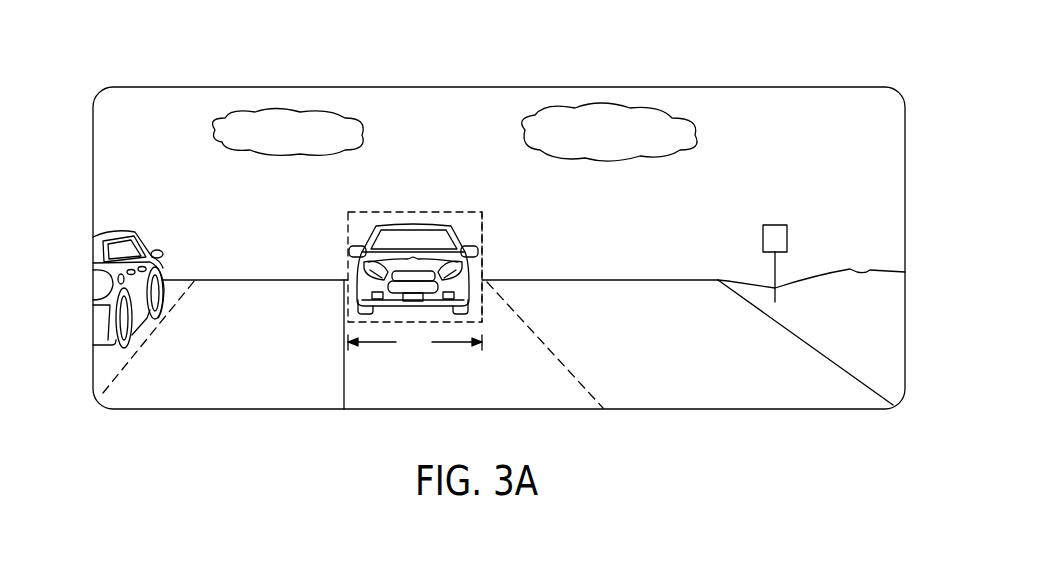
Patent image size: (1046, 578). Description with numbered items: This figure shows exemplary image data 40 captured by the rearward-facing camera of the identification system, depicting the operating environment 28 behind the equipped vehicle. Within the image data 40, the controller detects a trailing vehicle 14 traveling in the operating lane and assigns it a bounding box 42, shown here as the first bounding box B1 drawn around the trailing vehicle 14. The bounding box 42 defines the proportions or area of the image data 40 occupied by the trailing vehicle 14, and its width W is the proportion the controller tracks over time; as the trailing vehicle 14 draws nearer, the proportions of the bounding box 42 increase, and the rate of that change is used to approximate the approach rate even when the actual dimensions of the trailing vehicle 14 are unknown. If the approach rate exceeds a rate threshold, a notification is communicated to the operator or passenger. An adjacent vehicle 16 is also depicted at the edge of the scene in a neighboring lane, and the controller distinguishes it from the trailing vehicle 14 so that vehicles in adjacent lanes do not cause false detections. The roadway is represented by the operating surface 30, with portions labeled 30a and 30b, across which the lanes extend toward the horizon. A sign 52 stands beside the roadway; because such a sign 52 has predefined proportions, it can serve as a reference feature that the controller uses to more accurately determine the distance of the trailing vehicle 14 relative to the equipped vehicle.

The operating environment 28 is at (465, 102).
The image data 40 is at (758, 102).
The trailing vehicle 14 is at (385, 238).
The bounding box 42 is at (410, 212).
The first bounding box B1 is at (482, 227).
The adjacent vehicle 16 is at (128, 232).
The sign 52 is at (778, 235).
The operating surface 30 is at (498, 344).
The operating surface 30a is at (533, 357).
The operating surface 30b is at (785, 358).
The width W is at (415, 343).